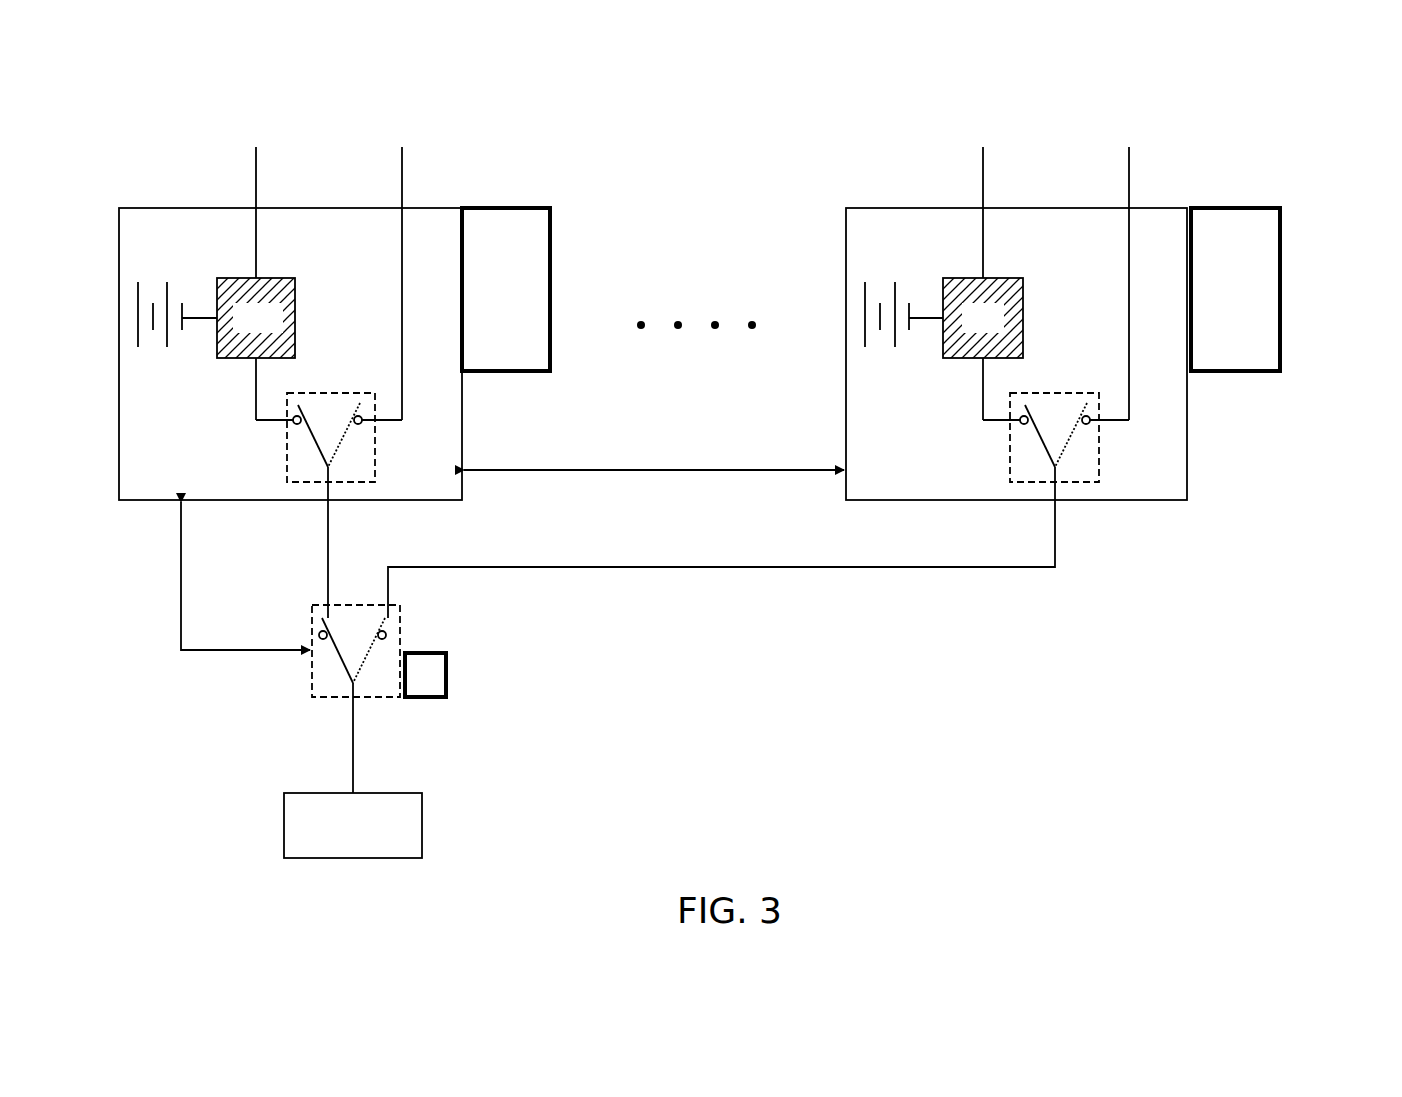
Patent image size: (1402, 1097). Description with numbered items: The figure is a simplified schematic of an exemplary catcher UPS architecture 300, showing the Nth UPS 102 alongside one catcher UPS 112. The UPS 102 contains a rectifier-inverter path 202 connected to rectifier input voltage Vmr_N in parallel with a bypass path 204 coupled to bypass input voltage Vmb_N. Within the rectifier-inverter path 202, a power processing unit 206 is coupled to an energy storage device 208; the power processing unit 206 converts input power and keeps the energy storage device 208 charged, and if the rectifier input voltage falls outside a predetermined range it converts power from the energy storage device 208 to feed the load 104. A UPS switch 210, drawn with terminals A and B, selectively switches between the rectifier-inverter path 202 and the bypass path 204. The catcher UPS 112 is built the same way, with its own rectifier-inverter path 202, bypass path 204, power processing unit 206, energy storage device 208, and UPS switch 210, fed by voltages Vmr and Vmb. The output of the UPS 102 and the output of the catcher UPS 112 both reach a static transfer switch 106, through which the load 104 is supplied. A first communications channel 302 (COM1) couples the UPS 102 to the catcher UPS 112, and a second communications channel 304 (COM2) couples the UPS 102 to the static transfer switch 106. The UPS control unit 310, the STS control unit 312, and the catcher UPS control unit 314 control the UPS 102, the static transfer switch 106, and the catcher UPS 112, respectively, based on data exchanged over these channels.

The catcher UPS architecture 300 is at (1262, 118).
The UPS 102 is at (142, 208).
The UPS control unit 310 is at (500, 208).
The catcher UPS 112 is at (1168, 208).
The catcher UPS control unit 314 is at (1280, 280).
The rectifier-inverter path 202 is at (256, 236).
The bypass path 204 is at (402, 178).
The power processing unit 206 is at (295, 318).
The energy storage device 208 is at (138, 318).
The UPS switch 210 is at (375, 447).
The first communications channel 302 is at (733, 468).
The second communications channel 304 is at (221, 652).
The static transfer switch 106 is at (400, 637).
The STS control unit 312 is at (446, 672).
The load 104 is at (422, 821).